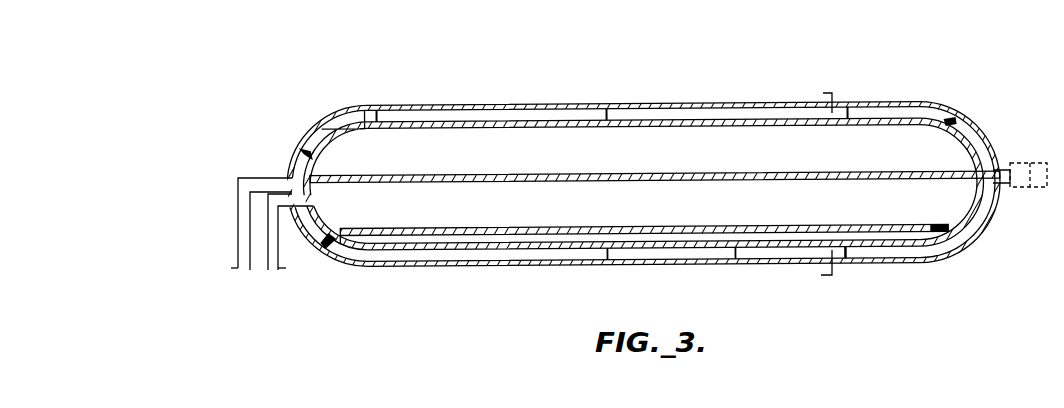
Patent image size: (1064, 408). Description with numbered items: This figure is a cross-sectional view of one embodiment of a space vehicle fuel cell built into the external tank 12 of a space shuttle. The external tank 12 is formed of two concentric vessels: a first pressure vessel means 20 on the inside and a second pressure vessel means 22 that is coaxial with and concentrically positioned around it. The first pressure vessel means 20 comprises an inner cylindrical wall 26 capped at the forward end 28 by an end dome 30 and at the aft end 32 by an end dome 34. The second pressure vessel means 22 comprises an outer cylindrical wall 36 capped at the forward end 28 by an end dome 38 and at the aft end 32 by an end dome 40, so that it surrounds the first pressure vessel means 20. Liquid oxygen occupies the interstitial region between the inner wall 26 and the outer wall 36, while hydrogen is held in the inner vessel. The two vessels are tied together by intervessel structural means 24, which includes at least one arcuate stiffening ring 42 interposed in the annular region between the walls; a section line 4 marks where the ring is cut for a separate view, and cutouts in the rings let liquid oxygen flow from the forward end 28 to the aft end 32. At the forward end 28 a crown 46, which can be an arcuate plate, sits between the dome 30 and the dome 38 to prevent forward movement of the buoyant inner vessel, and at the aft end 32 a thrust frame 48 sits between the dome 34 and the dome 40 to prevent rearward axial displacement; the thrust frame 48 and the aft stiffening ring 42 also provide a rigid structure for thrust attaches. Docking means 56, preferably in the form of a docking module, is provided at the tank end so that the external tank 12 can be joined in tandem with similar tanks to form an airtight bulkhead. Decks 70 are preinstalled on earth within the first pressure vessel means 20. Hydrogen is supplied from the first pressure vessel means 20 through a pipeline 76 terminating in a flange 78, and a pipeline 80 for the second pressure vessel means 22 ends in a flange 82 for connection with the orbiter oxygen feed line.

The section line 4- 4 is at (823, 93).
The external tank 12 is at (873, 300).
The first pressure vessel means 20 is at (847, 262).
The second pressure vessel means 22 is at (636, 266).
The intervessel structural means 24 is at (357, 89).
The inner cylindrical wall 26 is at (735, 250).
The forward end 28 is at (893, 135).
The end dome 30 is at (950, 120).
The aft end 32 is at (385, 150).
The end dome 34 is at (347, 128).
The outer cylindrical wall 36 is at (640, 103).
The end dome 38 is at (960, 236).
The end dome 40 is at (305, 131).
The arcuate stiffening ring 42 is at (378, 110).
The crown 46 is at (988, 208).
The thrust frame 48 is at (303, 153).
The docking means 56 is at (1030, 192).
The decks 70 is at (540, 227).
The pipeline 76 is at (278, 246).
The flange 78 is at (284, 270).
The pipeline 80 is at (247, 232).
The flange 82 is at (233, 270).